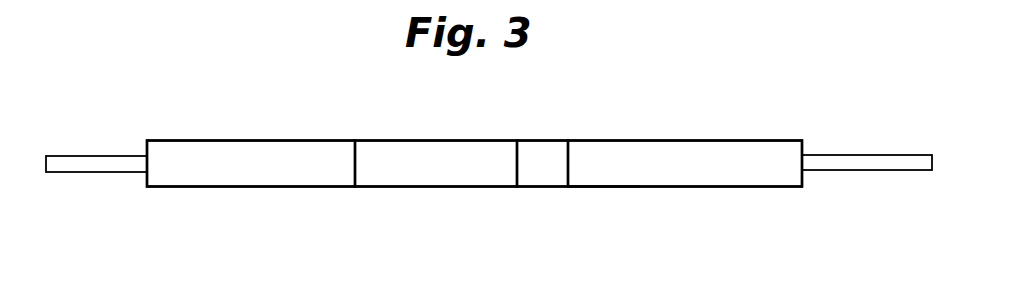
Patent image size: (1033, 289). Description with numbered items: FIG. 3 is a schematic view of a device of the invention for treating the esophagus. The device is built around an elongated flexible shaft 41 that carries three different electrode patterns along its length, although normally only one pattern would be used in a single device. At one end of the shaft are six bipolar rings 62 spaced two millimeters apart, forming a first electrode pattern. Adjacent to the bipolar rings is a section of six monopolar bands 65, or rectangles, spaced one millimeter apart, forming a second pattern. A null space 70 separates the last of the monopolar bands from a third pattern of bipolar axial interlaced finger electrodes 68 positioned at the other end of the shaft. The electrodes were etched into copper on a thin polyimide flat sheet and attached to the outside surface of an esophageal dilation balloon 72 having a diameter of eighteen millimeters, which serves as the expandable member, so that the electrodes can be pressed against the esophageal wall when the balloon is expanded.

The elongated flexible shaft 41 is at (358, 195).
The bipolar rings 62 is at (234, 152).
The monopolar bands 65 is at (495, 150).
The null space 70 is at (552, 150).
The bipolar axial interlaced finger electrodes 68 is at (642, 152).
The esophageal dilation balloon 72 is at (597, 187).